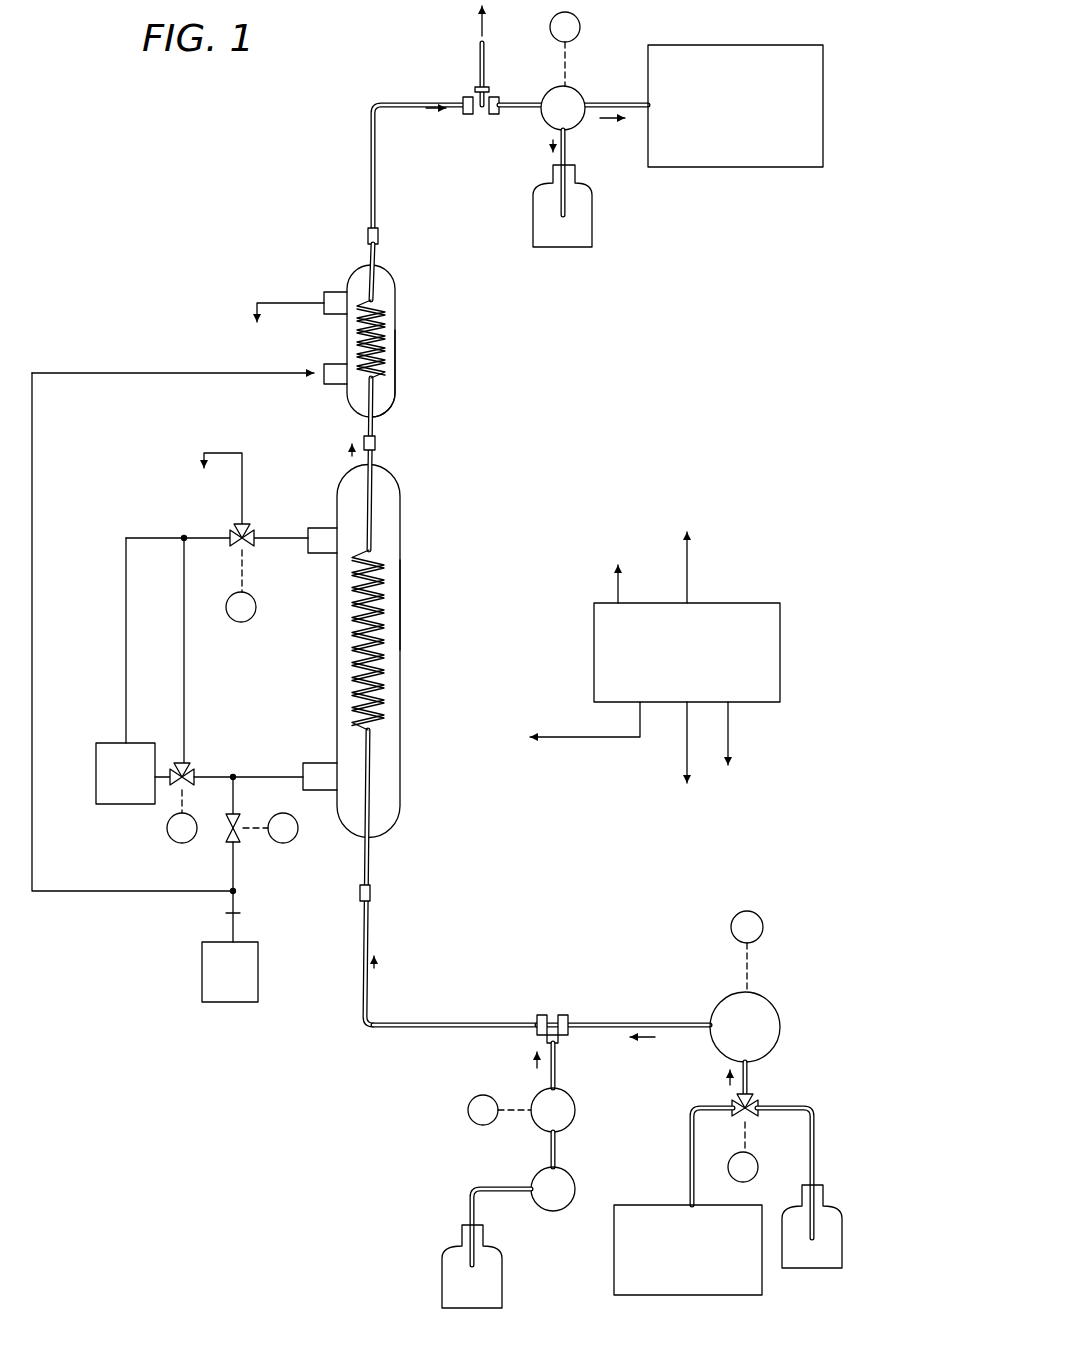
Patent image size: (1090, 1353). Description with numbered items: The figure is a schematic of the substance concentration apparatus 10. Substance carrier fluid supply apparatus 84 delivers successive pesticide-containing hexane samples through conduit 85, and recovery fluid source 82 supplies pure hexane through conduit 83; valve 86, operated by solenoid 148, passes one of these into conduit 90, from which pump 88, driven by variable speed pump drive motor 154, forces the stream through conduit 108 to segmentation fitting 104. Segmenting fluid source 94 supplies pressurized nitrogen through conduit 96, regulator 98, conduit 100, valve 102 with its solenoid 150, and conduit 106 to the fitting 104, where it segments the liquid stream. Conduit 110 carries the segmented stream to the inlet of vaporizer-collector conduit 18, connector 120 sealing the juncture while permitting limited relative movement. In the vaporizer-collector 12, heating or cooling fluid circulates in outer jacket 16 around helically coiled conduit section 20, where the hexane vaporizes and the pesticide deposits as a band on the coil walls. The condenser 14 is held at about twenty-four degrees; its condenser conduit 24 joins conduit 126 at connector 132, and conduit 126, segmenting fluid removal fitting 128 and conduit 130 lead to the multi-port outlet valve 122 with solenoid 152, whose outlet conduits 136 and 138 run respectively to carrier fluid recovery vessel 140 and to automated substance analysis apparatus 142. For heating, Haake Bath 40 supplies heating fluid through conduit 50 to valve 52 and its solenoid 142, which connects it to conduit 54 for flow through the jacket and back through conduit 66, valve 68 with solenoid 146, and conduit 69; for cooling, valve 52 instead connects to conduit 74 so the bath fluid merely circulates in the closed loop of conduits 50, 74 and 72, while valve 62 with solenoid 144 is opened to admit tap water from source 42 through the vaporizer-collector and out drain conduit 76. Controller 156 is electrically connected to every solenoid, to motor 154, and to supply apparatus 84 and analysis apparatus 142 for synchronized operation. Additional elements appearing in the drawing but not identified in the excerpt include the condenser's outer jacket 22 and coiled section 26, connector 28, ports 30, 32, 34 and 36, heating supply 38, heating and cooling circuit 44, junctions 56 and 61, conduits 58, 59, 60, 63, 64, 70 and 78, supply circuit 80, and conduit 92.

The apparatus 10 is at (322, 128).
The vaporizer-collector 12 is at (403, 573).
The condenser 14 is at (398, 336).
The outer jacket 16 is at (402, 590).
The vaporizer-collector conduit 18 is at (375, 496).
The helically coiled conduit section 20 is at (382, 668).
The chamber wall 22 is at (396, 385).
The condenser conduit 24 is at (375, 292).
The cooling coil 26 is at (385, 352).
The fitting 28 is at (378, 443).
The inlet port 30 is at (318, 764).
The outlet port 32 is at (320, 555).
The inlet port 34 is at (333, 386).
The outlet port 36 is at (338, 291).
The heating fluid supply 38 is at (120, 823).
The Haake Bath 40 is at (108, 743).
The tap water source 42 is at (218, 1005).
The fluid circuit 44 is at (211, 603).
The conduit 50 is at (165, 770).
The valve 52 is at (187, 771).
The conduit 54 is at (210, 777).
The junction 56 is at (237, 781).
The conduit 58 is at (268, 777).
The conduit 59 is at (229, 853).
The conduit 60 is at (240, 913).
The junction 61 is at (238, 891).
The valve 62 is at (240, 840).
The conduit 63 is at (249, 380).
The conduit 64 is at (231, 814).
The conduit 66 is at (282, 543).
The valve 68 is at (250, 532).
The conduit 69 is at (209, 544).
The conduit 70 is at (182, 536).
The conduit 72 is at (126, 608).
The conduit 74 is at (184, 660).
The drain conduit 76 is at (244, 456).
The drain conduit 78 is at (283, 300).
The fluid supply circuit 80 is at (698, 1099).
The recovery fluid source 82 is at (811, 1278).
The conduit 83 is at (809, 1159).
The substance carrier fluid supply apparatus 84 is at (614, 1259).
The conduit 85 is at (690, 1170).
The valve 86 is at (766, 1106).
The pump 88 is at (718, 1003).
The conduit 90 is at (753, 1079).
The conduit 92 is at (568, 1147).
The segmenting fluid source 94 is at (503, 1290).
The conduit 96 is at (484, 1192).
The regulator 98 is at (576, 1183).
The conduit 100 is at (550, 1152).
The valve 102 is at (577, 1104).
The segmentation fitting 104 is at (550, 1013).
The conduit 106 is at (560, 1068).
The conduit 108 is at (636, 1022).
The conduit 110 is at (496, 1022).
The connector 120 is at (371, 895).
The outlet valve means 122 is at (578, 119).
The conduit 126 is at (379, 173).
The segmenting fluid removal fitting 128 is at (478, 117).
The conduit 130 is at (513, 101).
The connector 132 is at (380, 236).
The outlet conduit 136 is at (567, 155).
The outlet conduit 138 is at (614, 102).
The carrier fluid recovery vessel 140 is at (592, 205).
The automated substance analysis apparatus 142 is at (727, 169).
The valve operating solenoid 144 is at (290, 845).
The valve operating solenoid 146 is at (255, 613).
The valve operating solenoid 148 is at (736, 1180).
The valve operating solenoid 150 is at (468, 1104).
The valve operating solenoid 152 is at (580, 27).
The variable speed pump drive motor 154 is at (762, 919).
The apparatus controller 156 is at (594, 650).